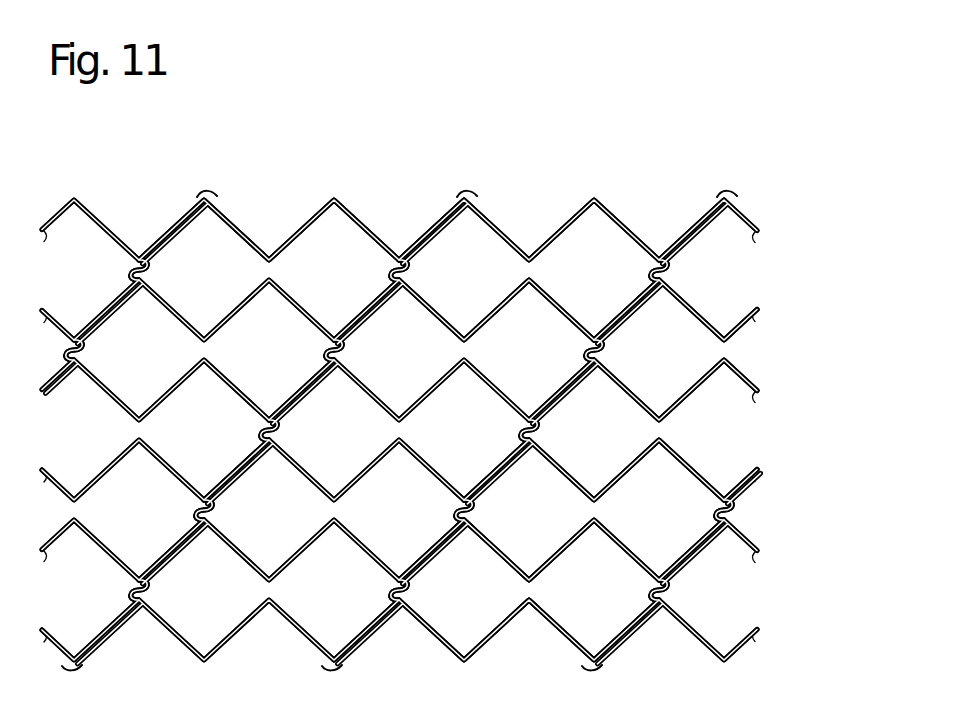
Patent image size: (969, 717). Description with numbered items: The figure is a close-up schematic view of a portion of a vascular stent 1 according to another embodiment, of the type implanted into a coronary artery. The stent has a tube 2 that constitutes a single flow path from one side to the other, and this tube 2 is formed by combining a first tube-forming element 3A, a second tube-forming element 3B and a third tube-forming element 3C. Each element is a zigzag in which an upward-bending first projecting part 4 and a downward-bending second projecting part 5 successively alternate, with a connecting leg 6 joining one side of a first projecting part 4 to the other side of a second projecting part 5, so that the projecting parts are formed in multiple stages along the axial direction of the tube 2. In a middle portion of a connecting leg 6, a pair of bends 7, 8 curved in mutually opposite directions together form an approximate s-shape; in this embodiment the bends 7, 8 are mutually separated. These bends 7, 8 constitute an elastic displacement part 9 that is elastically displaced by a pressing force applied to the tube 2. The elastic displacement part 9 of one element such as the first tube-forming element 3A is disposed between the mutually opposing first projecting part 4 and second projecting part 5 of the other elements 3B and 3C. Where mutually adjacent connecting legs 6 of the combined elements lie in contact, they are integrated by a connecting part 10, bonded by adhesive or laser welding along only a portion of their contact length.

The vascular stent 1 is at (702, 151).
The tube 2 is at (240, 628).
The first tube-forming element 3A is at (305, 216).
The second tube-forming element 3B is at (490, 208).
The third tube-forming element 3C is at (430, 302).
The first projecting part 4 is at (466, 525).
The second projecting part 5 is at (458, 501).
The connecting leg 6 is at (318, 366).
The bend 7 is at (393, 274).
The bend 8 is at (393, 267).
The elastic displacement part 9 is at (346, 286).
The connecting part 10 is at (308, 400).